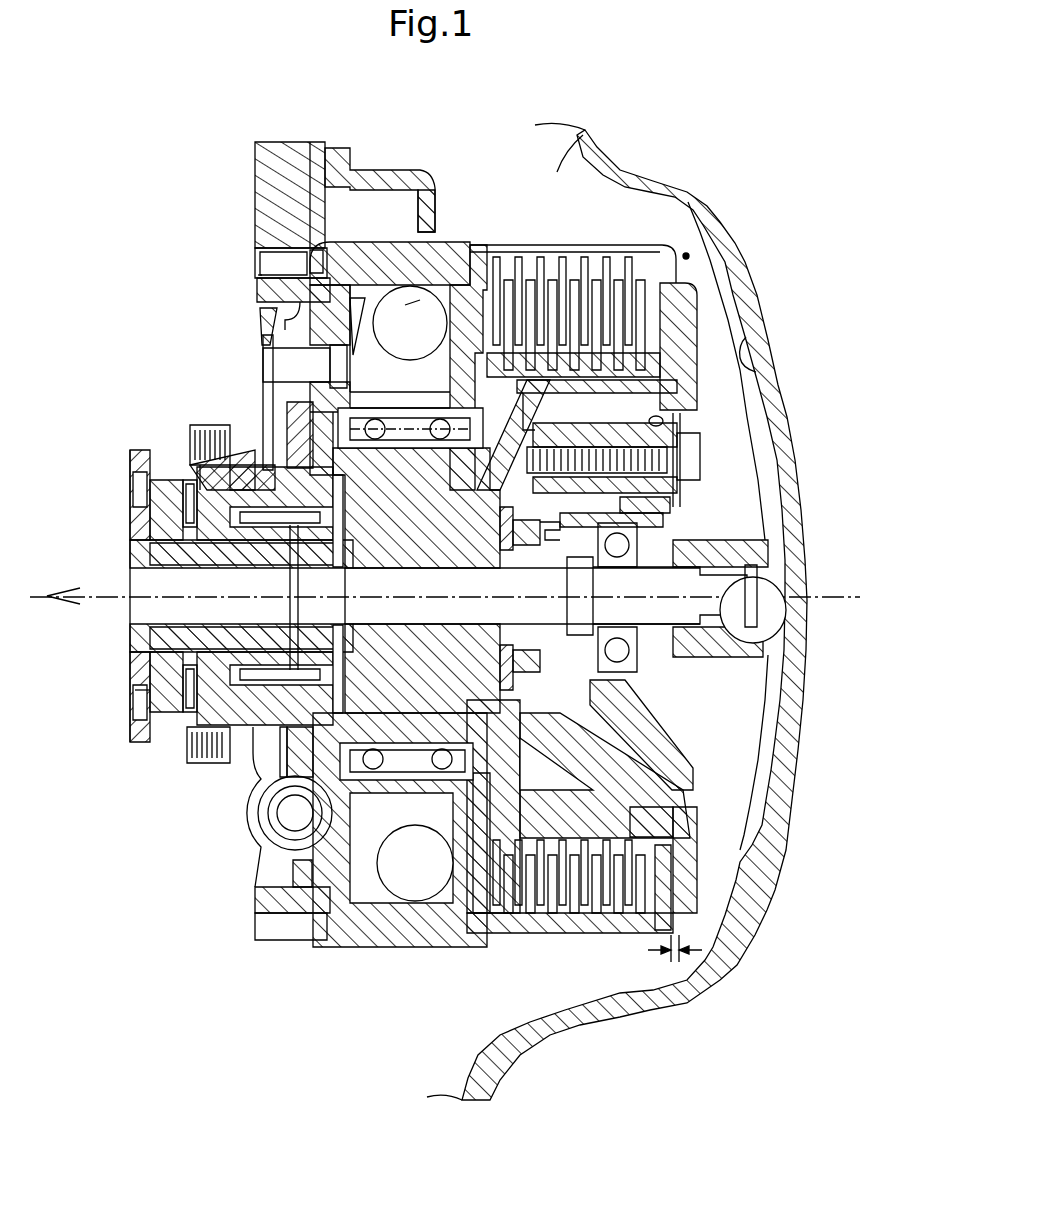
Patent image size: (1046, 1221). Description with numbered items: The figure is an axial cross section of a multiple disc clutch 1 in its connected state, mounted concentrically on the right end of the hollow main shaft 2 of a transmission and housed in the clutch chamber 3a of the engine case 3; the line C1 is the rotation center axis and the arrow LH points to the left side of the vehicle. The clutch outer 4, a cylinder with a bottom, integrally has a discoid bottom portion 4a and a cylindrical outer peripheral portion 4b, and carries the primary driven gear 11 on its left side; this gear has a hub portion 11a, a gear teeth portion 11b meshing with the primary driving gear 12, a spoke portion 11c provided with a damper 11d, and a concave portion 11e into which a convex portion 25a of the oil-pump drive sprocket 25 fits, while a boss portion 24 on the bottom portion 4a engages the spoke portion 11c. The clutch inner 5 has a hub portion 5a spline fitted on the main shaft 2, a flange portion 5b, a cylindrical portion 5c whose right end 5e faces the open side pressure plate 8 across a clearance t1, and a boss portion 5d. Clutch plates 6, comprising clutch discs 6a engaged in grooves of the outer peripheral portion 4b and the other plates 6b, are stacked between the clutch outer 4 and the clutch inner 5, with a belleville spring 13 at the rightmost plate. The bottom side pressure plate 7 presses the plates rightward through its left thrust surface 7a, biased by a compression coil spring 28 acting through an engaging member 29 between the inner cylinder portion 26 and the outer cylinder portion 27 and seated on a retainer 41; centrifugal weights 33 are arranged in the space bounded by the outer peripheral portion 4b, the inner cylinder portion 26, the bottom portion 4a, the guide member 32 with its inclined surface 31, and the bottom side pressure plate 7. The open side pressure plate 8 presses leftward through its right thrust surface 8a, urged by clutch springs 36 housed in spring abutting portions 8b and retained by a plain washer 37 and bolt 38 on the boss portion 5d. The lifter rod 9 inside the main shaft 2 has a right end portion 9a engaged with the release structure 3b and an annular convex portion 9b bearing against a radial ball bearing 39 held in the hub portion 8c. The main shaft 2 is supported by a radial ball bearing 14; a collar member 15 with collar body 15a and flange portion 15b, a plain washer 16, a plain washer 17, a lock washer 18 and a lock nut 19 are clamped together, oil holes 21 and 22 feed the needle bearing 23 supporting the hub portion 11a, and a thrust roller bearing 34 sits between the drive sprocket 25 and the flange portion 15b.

The multiple disc clutch 1 is at (445, 608).
The main shaft 2 is at (157, 637).
The engine case 3 is at (695, 183).
The clutch chamber 3a is at (690, 253).
The release structure 3b is at (787, 648).
The clutch outer 4 is at (487, 243).
The bottom portion 4a is at (286, 420).
The outer peripheral portion 4b is at (435, 222).
The clutch inner 5 is at (577, 603).
The hub portion 5a is at (420, 663).
The flange portion 5b is at (513, 763).
The cylindrical portion 5c is at (643, 807).
The boss portion 5d is at (668, 503).
The right end of cylindrical portion 5e is at (675, 378).
The clutch plates 6 is at (570, 538).
The clutch disc 6a is at (627, 252).
The driven plates 6b is at (567, 262).
The bottom side pressure plate 7 is at (456, 920).
The left thrust surface 7a is at (497, 920).
The open side pressure plate 8 is at (683, 870).
The right thrust surface 8a is at (645, 905).
The spring abutting portion 8b is at (663, 421).
The hub portion 8c is at (660, 525).
The lifter rod 9 is at (762, 579).
The right end portion 9a is at (703, 572).
The annular convex portion 9b is at (585, 635).
The primary driven gear 11 is at (253, 290).
The hub portion 11a is at (238, 450).
The gear teeth portion 11b is at (258, 280).
The spoke portion 11c is at (300, 395).
The damper 11d is at (262, 818).
The concave portion 11e is at (190, 488).
The primary driving gear 12 is at (258, 170).
The belleville spring 13 is at (665, 337).
The radial ball bearing 14 is at (135, 452).
The collar member 15 is at (185, 596).
The collar body 15a is at (197, 565).
The flange portion 15b is at (167, 517).
The plain washer 16 is at (270, 440).
The plain washer 17 is at (497, 535).
The lock washer 18 is at (515, 548).
The lock nut 19 is at (530, 548).
The oil hole 21 is at (305, 556).
The oil hole 22 is at (294, 560).
The radial needle bearing 23 is at (258, 522).
The boss portion 24 is at (280, 338).
The drive sprocket 25 is at (195, 720).
The convex portion 25a is at (198, 427).
The inner cylinder portion 26 is at (410, 453).
The outer cylinder portion 27 is at (382, 400).
The compression coil spring 28 is at (393, 760).
The engaging member 29 is at (453, 757).
The inclined surface 31 is at (367, 337).
The guide member 32 is at (360, 300).
The centrifugal weight 33 is at (407, 307).
The thrust roller bearing 34 is at (190, 690).
The clutch spring 36 is at (688, 480).
The plain washer 37 is at (703, 465).
The bolt 38 is at (703, 448).
The radial ball bearing 39 is at (652, 668).
The retainer 41 is at (550, 559).
The rotation center axis C1 is at (828, 598).
The clearance t1 is at (674, 961).
The arrow indicating left side LH is at (61, 611).